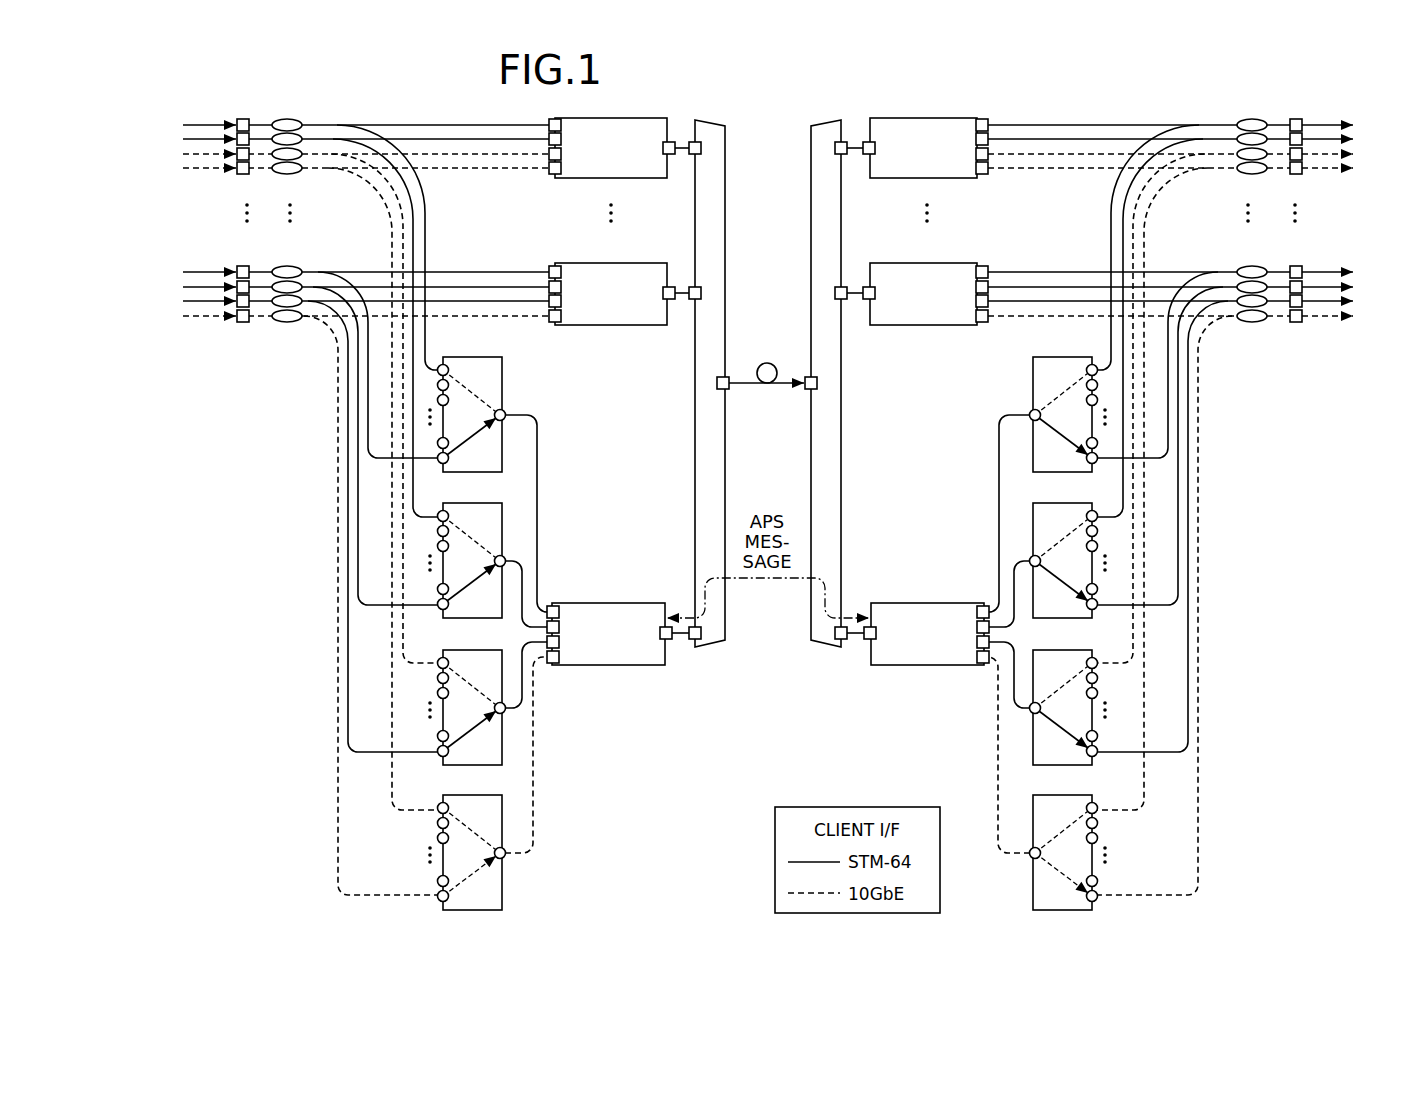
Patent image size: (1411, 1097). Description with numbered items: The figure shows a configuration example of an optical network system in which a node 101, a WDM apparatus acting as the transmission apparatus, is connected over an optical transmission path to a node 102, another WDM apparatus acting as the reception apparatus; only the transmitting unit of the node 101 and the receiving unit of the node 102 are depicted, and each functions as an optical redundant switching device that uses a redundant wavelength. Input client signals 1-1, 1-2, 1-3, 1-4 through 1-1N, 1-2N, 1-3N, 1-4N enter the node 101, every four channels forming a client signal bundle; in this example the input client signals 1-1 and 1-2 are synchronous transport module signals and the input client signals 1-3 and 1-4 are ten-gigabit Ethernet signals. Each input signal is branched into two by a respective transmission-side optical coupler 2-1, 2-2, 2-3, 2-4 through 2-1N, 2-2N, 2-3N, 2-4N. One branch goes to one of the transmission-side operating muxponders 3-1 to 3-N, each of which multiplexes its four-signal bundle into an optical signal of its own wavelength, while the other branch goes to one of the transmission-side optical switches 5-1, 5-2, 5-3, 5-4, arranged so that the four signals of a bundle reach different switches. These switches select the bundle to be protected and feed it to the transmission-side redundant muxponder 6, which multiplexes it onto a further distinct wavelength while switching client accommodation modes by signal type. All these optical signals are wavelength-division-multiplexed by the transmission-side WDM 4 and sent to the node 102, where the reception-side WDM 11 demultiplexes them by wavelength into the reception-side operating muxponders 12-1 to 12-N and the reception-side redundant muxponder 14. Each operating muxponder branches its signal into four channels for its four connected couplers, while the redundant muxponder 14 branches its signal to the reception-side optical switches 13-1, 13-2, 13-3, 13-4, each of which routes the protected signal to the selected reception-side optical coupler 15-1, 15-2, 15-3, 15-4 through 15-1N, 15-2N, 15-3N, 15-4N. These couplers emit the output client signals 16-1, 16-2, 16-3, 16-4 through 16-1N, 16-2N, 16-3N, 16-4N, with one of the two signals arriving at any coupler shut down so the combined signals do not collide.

The node 101 is at (466, 67).
The node 102 is at (1101, 67).
The input client signal 1-1 is at (220, 125).
The input client signal 1-2 is at (215, 139).
The input client signal 1-3 is at (207, 154).
The input client signal 1-4 is at (193, 168).
The input client signal 1-1N is at (208, 272).
The input client signal 1-2N is at (190, 287).
The input client signal 1-3N is at (188, 302).
The input client signal 1-4N is at (217, 316).
The transmission-side optical coupler 2-1 is at (287, 119).
The transmission-side optical coupler 2-2 is at (302, 139).
The transmission-side optical coupler 2-3 is at (302, 154).
The transmission-side optical coupler 2-4 is at (302, 168).
The transmission-side optical coupler 2-1N is at (287, 266).
The transmission-side optical coupler 2-2N is at (300, 285).
The transmission-side optical coupler 2-3N is at (300, 300).
The transmission-side optical coupler 2-4N is at (302, 315).
The transmission-side operating muxponder 3-1 is at (615, 118).
The transmission-side operating muxponder 3-N is at (615, 264).
The transmission-side WDM (wavelength division multiplexing unit) 4 is at (707, 120).
The transmission-side optical switch 5-1 is at (467, 357).
The transmission-side optical switch 5-2 is at (467, 503).
The transmission-side optical switch 5-3 is at (467, 650).
The transmission-side optical switch 5-4 is at (467, 795).
The transmission-side redundant muxponder 6 is at (622, 603).
The reception-side WDM (wavelength demultiplexing unit) 11 is at (826, 126).
The reception-side operating muxponder 12-1 is at (918, 118).
The reception-side operating muxponder 12-N is at (918, 264).
The reception-side optical switch 13-1 is at (1057, 357).
The reception-side optical switch 13-2 is at (1057, 503).
The reception-side optical switch 13-3 is at (1057, 650).
The reception-side optical switch 13-4 is at (1057, 795).
The reception-side redundant muxponder 14 is at (919, 603).
The reception-side optical coupler 15-1 is at (1252, 119).
The reception-side optical coupler 15-2 is at (1237, 139).
The reception-side optical coupler 15-3 is at (1237, 154).
The reception-side optical coupler 15-4 is at (1237, 168).
The reception-side optical coupler 15-1N is at (1252, 266).
The reception-side optical coupler 15-2N is at (1237, 285).
The reception-side optical coupler 15-3N is at (1237, 300).
The reception-side optical coupler 15-4N is at (1237, 315).
The output client signal 16-1 is at (1300, 125).
The output client signal 16-2 is at (1310, 139).
The output client signal 16-3 is at (1318, 154).
The output client signal 16-4 is at (1340, 168).
The output client signal 16-1N is at (1317, 272).
The output client signal 16-2N is at (1325, 287).
The output client signal 16-3N is at (1330, 302).
The output client signal 16-4N is at (1312, 318).